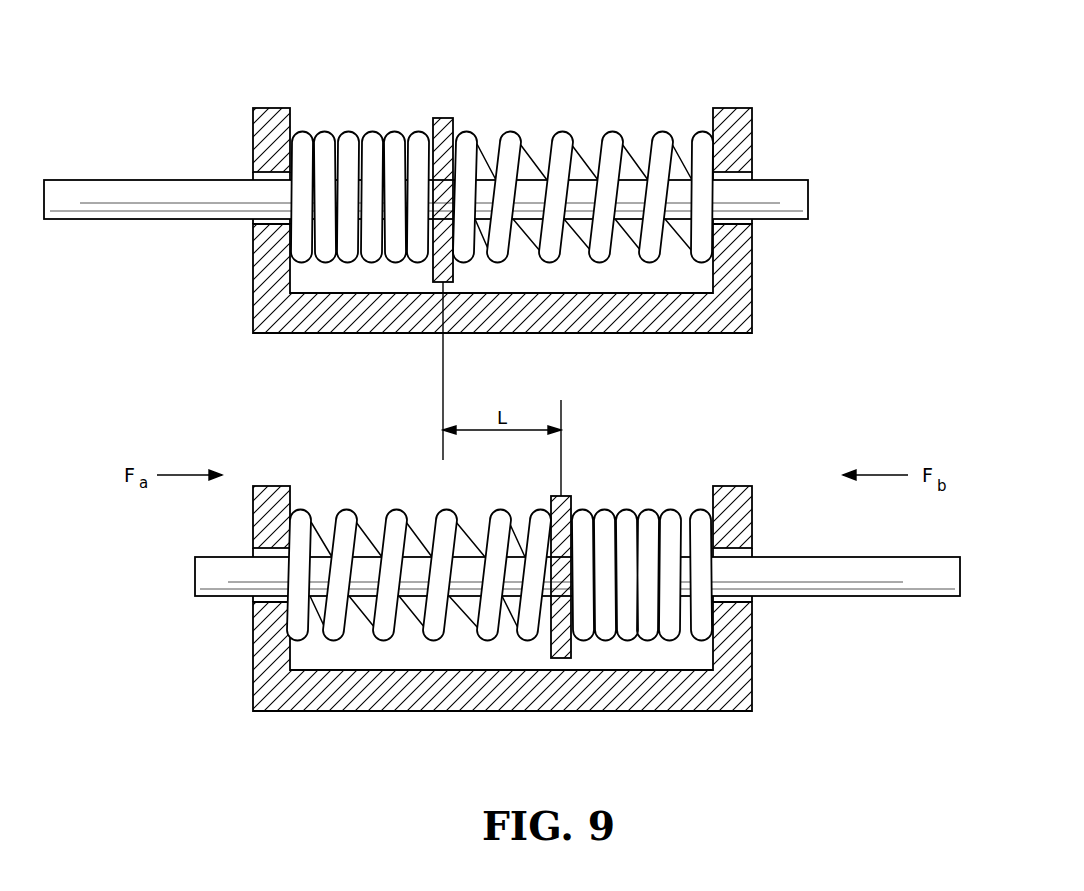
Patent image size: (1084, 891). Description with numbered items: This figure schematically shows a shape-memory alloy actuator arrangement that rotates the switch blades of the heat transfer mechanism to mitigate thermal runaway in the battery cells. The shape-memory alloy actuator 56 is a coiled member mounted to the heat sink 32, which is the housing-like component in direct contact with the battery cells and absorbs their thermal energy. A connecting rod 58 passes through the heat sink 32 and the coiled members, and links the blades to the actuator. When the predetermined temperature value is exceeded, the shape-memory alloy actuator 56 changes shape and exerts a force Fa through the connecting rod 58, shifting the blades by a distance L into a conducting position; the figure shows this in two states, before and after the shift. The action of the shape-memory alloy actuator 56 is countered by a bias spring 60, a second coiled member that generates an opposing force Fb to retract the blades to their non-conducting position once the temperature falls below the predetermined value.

The heat sink 32 is at (732, 307).
The shape-memory alloy actuator 56 is at (378, 128).
The connecting rod 58 is at (170, 200).
The bias spring 60 is at (567, 140).